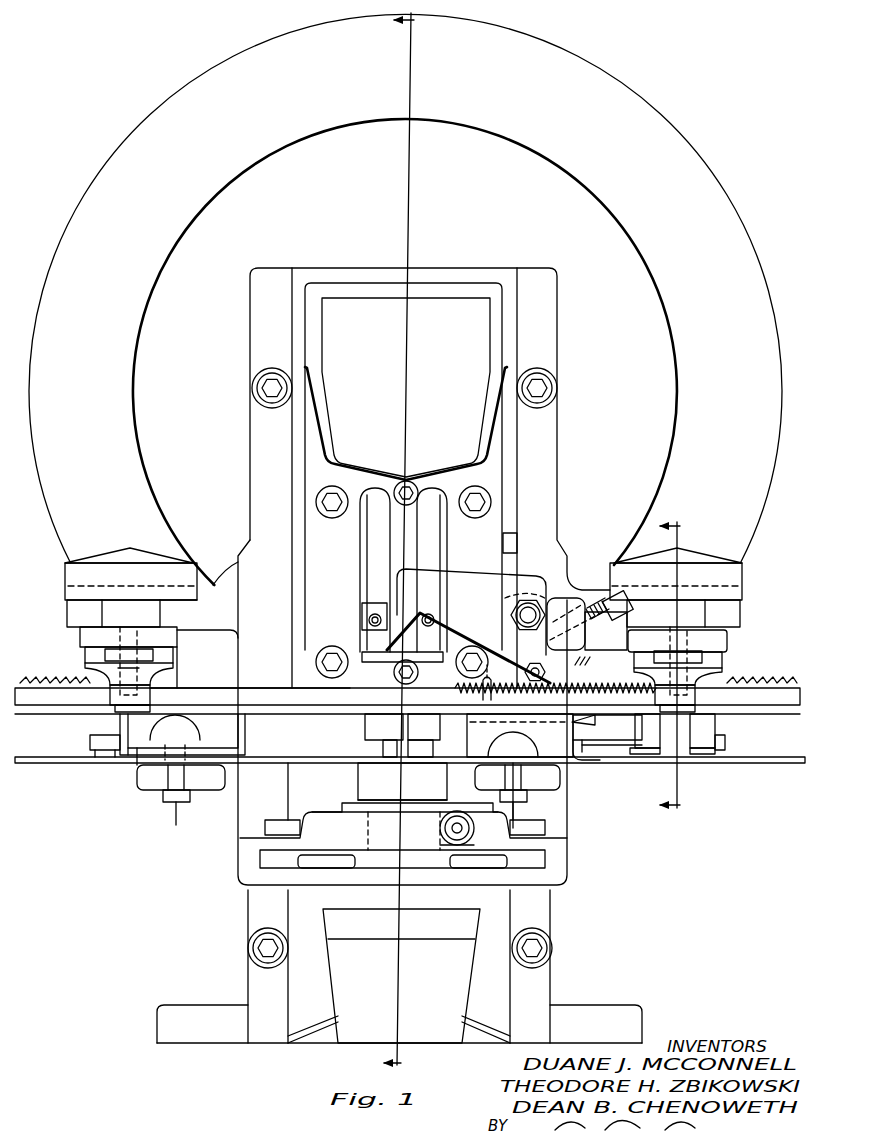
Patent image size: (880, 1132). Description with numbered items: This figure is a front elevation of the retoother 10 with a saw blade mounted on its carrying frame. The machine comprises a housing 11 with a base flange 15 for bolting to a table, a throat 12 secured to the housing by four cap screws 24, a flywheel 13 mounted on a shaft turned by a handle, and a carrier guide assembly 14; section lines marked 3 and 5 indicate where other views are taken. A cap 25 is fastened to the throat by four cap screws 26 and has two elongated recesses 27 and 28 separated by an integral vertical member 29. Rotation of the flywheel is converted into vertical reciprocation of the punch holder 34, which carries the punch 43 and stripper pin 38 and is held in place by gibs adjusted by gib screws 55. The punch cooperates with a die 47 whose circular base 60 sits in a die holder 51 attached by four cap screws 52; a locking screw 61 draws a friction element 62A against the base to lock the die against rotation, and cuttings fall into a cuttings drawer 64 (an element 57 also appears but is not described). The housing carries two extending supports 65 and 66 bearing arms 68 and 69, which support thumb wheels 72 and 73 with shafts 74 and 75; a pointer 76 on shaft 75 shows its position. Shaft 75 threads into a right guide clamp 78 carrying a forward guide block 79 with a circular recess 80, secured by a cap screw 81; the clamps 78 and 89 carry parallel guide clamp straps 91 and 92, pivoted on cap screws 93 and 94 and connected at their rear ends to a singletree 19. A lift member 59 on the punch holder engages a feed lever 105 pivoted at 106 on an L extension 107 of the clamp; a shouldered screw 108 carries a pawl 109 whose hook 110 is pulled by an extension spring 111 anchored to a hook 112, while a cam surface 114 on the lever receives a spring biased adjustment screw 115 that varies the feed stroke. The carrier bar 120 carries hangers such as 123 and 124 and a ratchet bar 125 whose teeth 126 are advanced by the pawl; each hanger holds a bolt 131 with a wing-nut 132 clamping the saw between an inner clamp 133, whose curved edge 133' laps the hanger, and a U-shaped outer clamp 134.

The section line 3- 3 is at (407, 546).
The section line 5- 5 is at (765, 785).
The retoother 10 is at (238, 1048).
The housing 11 is at (180, 1002).
The throat 12 is at (316, 268).
The flywheel 13 is at (135, 130).
The carrier guide assembly 14 is at (746, 720).
The base flange 15 is at (162, 1025).
The singletree 19 is at (607, 735).
The cap screws 24 is at (252, 390).
The cap 25 is at (482, 296).
The cap screws 26 is at (332, 518).
The elongated recess 27 is at (362, 567).
The elongated recess 28 is at (447, 545).
The integral vertical member 29 is at (422, 522).
The punch holder 34 is at (365, 718).
The stripper pin 38 is at (383, 750).
The punch 43 is at (424, 725).
The die 47 is at (356, 774).
The die holder 51 is at (312, 812).
The cap screws 52 is at (265, 828).
The gib screws 55 is at (403, 480).
The stop 57 is at (517, 541).
The lift member 59 is at (362, 640).
The circular base 60 is at (432, 795).
The locking screw 61 is at (459, 833).
The friction element 62A is at (452, 846).
The cuttings drawer 64 is at (375, 985).
The extending support 65 is at (220, 590).
The extending support 66 is at (588, 590).
The arm 68 is at (80, 637).
The arm 69 is at (727, 640).
The thumb wheel 72 is at (66, 566).
The thumb wheel 73 is at (744, 567).
The shaft 74 is at (134, 640).
The shaft 75 is at (683, 613).
The pointer 76 is at (718, 613).
The right guide clamp 78 is at (722, 658).
The forward guide block 79 is at (110, 692).
The circular recess 80 is at (150, 703).
The cap screw 81 is at (153, 655).
The guide clamp 89 is at (85, 655).
The guide clamp strap 91 is at (90, 742).
The guide clamp strap 92 is at (640, 756).
The cap screw 93 is at (96, 756).
The cap screw 94 is at (648, 756).
The feed lever 105 is at (470, 578).
The pivot 106 is at (520, 604).
The L extension 107 is at (592, 708).
The shouldered screw 108 is at (532, 660).
The pawl 109 is at (486, 670).
The hook 110 is at (520, 771).
The extension spring 111 is at (576, 636).
The hook 112 is at (555, 697).
The cam surface 114 is at (514, 615).
The spring biased adjustment screw 115 is at (622, 592).
The carrier bar 120 is at (258, 705).
The hanger 123 is at (143, 760).
The hanger 124 is at (580, 762).
The ratchet bar 125 is at (210, 690).
The teeth 126 is at (44, 682).
The bolt 131 is at (185, 737).
The wing-nut 132 is at (176, 804).
The inner clamp 133 is at (109, 773).
The curved edge 133' is at (202, 734).
The outer clamp 134 is at (152, 790).